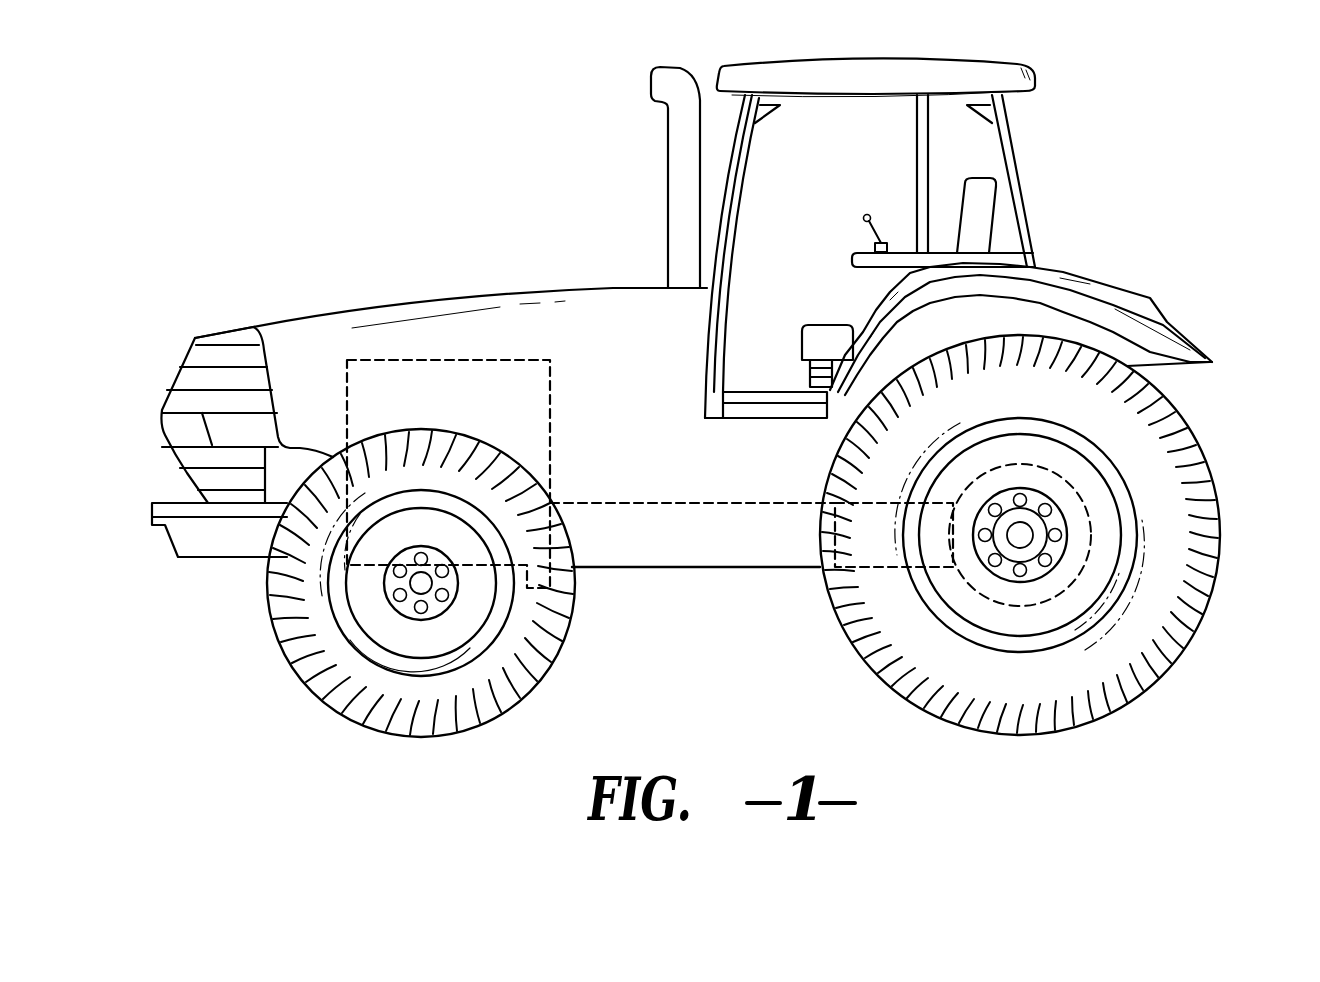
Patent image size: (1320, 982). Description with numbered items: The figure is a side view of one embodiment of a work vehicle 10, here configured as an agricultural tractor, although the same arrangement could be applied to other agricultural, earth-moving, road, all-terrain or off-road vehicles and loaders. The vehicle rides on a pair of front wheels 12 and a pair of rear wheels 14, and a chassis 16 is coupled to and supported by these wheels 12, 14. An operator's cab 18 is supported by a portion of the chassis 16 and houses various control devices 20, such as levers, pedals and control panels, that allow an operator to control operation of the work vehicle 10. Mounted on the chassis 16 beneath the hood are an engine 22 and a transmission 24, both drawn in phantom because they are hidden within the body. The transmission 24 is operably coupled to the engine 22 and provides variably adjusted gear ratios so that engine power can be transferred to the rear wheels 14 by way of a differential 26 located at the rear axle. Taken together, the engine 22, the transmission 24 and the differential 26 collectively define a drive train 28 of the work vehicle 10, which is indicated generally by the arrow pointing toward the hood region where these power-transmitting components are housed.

The work vehicle 10 is at (346, 192).
The front wheels 12 is at (262, 597).
The rear wheels 14 is at (1224, 573).
The chassis 16 is at (640, 568).
The operator's cab 18 is at (1028, 185).
The control devices 20 is at (866, 213).
The engine 22 is at (421, 360).
The transmission 24 is at (707, 500).
The differential 26 is at (1093, 540).
The drive train 28 is at (608, 322).